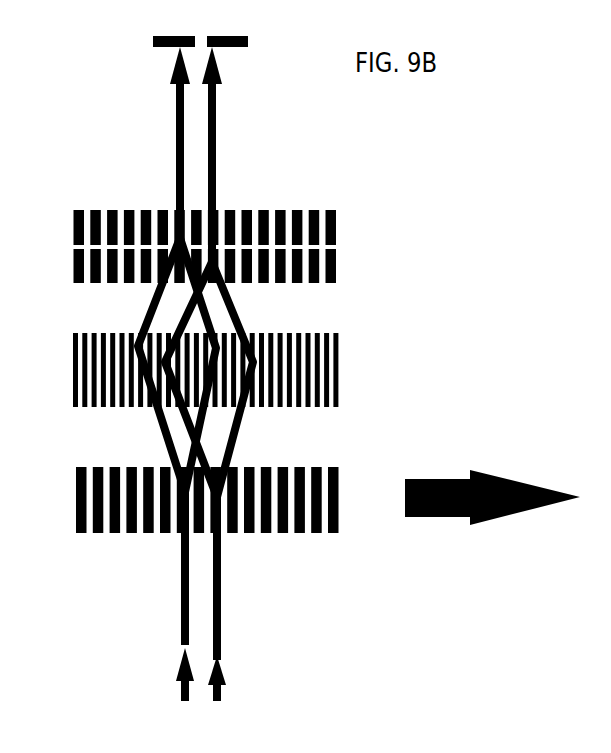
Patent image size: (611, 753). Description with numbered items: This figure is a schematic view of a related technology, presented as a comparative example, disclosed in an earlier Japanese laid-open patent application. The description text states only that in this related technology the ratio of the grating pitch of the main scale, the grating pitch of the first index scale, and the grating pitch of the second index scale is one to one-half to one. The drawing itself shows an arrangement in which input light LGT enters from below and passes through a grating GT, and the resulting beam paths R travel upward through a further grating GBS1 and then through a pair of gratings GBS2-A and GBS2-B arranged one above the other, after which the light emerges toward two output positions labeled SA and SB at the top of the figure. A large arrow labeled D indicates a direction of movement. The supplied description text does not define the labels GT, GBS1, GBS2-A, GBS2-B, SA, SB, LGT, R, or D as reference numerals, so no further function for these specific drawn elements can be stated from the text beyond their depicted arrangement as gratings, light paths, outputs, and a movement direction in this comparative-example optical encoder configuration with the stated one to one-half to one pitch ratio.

The grating GT is at (223, 498).
The first grating beam splitter GBS1 is at (230, 370).
The second grating beam splitter GBS2-A is at (513, 212).
The second grating beam splitter GBS2-B is at (513, 262).
The output signal / detector SA is at (145, 10).
The output signal / detector SB is at (266, 10).
The input light LGT is at (201, 611).
The light beam paths R is at (186, 329).
The direction of movement D is at (492, 505).